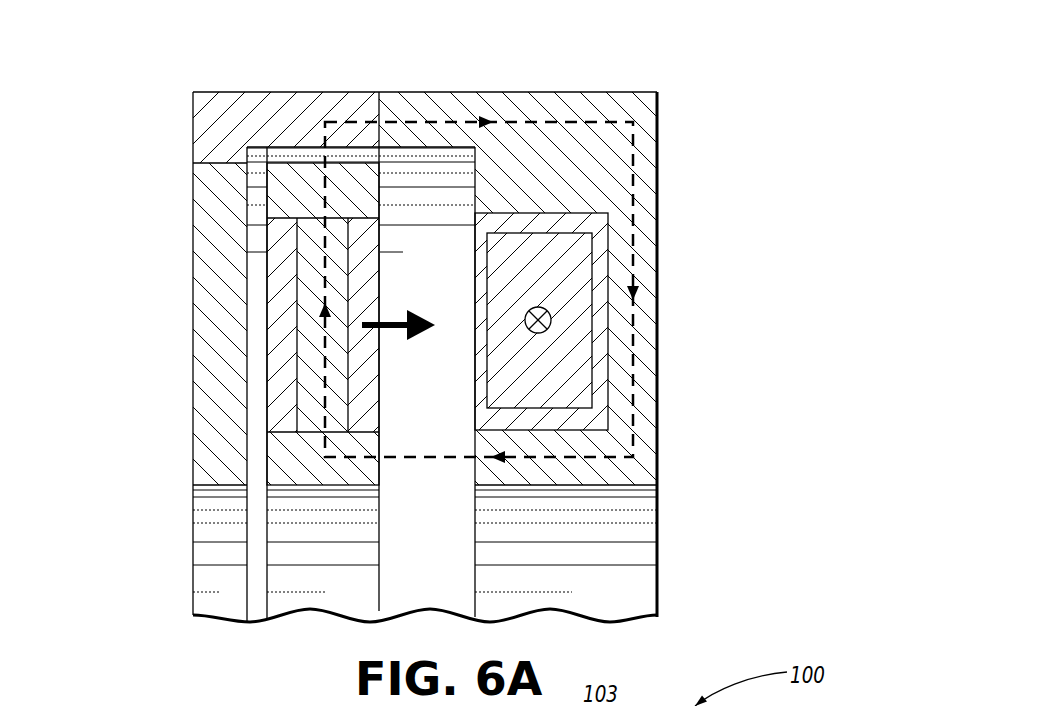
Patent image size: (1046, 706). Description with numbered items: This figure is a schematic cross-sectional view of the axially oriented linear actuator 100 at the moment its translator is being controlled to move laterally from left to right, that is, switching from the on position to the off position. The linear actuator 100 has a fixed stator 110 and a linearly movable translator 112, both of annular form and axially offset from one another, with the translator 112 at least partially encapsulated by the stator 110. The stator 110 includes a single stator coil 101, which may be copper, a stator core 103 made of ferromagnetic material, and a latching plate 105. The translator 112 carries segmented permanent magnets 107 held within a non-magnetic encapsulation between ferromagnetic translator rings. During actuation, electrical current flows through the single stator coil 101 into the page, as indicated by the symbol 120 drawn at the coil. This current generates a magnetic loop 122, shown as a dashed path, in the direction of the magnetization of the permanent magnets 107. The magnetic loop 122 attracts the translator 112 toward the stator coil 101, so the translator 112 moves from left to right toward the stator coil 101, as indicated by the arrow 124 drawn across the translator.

The linear actuator 100 is at (688, 72).
The stator coil 101 is at (545, 268).
The stator core 103 is at (595, 90).
The latching plate 105 is at (193, 312).
The segmented permanent magnets 107 is at (337, 303).
The stator 110 is at (568, 537).
The translator 112 is at (317, 573).
The symbol 120 is at (540, 334).
The magnetic loop 122 is at (325, 405).
The arrow 124 is at (390, 330).